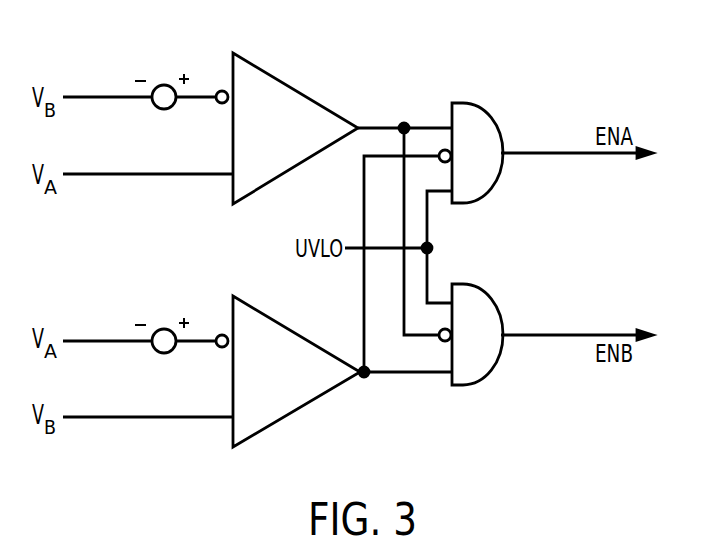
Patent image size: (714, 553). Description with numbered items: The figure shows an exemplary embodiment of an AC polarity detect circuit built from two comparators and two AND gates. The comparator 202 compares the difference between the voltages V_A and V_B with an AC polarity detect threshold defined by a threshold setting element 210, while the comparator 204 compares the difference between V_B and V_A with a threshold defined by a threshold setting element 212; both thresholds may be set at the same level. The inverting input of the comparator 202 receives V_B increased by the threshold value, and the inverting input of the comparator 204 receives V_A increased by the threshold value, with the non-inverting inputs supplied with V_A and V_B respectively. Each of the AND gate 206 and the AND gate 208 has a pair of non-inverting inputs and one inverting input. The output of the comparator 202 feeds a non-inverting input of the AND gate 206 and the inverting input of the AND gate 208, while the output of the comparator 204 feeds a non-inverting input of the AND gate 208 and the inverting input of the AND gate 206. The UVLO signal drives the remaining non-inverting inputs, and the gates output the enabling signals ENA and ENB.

The comparator 202 is at (288, 86).
The comparator 204 is at (286, 328).
The AND gate 206 is at (486, 113).
The AND gate 208 is at (486, 295).
The threshold setting element 210 is at (164, 85).
The threshold setting element 212 is at (164, 329).